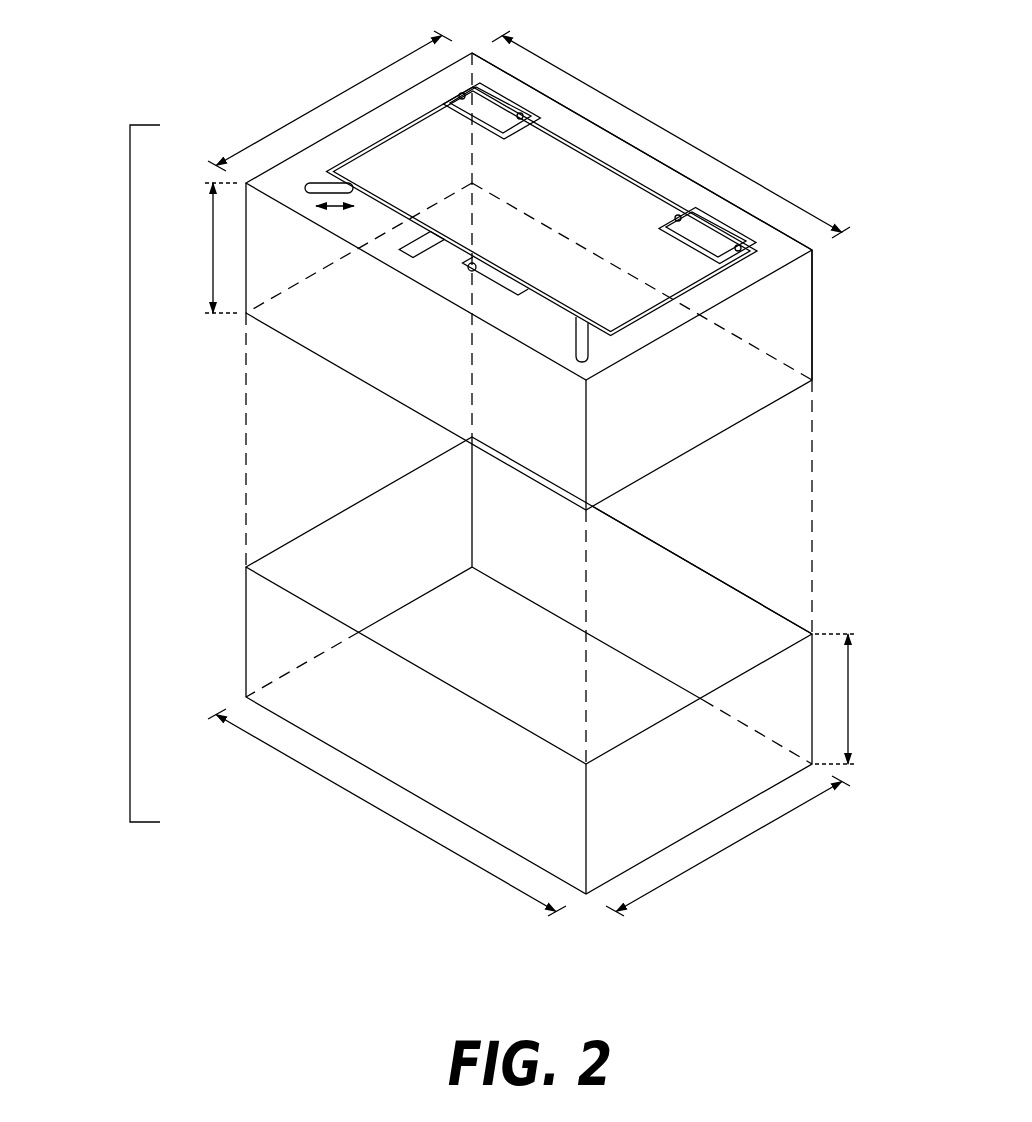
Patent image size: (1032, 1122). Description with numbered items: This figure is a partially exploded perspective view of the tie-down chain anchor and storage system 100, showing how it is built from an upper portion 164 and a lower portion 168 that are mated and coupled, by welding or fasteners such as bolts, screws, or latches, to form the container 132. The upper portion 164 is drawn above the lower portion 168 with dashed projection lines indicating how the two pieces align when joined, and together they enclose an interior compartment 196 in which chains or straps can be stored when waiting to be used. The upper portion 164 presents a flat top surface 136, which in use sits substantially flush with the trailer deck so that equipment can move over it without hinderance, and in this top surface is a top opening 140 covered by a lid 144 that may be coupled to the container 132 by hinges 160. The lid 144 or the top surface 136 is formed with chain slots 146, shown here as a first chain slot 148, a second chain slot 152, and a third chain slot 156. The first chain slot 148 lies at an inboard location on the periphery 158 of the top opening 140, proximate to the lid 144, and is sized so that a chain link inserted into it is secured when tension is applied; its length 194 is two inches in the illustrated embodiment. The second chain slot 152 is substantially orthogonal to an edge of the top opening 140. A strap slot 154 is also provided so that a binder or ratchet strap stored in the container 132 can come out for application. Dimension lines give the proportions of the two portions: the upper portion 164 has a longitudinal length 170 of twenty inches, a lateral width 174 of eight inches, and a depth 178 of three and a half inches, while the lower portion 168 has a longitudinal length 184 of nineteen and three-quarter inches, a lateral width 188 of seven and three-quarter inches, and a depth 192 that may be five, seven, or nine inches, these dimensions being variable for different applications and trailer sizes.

The tie-down chain anchor and storage system 100 is at (88, 473).
The container 132 is at (128, 442).
The flat top surface 136 is at (780, 240).
The top opening 140 is at (575, 158).
The lid 144 is at (428, 138).
The chain slots 146 is at (452, 224).
The first chain slot 148 is at (318, 186).
The second chain slot 152 is at (412, 258).
The strap slot 154 is at (520, 305).
The third chain slot 156 is at (590, 348).
The periphery of the top opening 158 is at (445, 248).
The hinges 160 is at (513, 103).
The upper portion 164 is at (814, 320).
The lower portion 168 is at (385, 485).
The longitudinal length 170 is at (678, 138).
The lateral width 174 is at (330, 104).
The depth 178 is at (210, 241).
The longitudinal length 184 is at (400, 822).
The lateral width 188 is at (760, 824).
The depth 192 is at (850, 697).
The length 194 is at (332, 210).
The interior compartment 196 is at (665, 592).